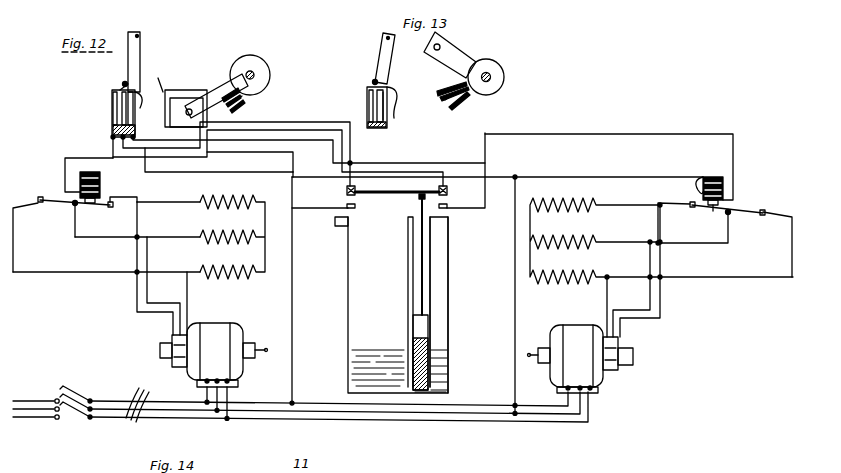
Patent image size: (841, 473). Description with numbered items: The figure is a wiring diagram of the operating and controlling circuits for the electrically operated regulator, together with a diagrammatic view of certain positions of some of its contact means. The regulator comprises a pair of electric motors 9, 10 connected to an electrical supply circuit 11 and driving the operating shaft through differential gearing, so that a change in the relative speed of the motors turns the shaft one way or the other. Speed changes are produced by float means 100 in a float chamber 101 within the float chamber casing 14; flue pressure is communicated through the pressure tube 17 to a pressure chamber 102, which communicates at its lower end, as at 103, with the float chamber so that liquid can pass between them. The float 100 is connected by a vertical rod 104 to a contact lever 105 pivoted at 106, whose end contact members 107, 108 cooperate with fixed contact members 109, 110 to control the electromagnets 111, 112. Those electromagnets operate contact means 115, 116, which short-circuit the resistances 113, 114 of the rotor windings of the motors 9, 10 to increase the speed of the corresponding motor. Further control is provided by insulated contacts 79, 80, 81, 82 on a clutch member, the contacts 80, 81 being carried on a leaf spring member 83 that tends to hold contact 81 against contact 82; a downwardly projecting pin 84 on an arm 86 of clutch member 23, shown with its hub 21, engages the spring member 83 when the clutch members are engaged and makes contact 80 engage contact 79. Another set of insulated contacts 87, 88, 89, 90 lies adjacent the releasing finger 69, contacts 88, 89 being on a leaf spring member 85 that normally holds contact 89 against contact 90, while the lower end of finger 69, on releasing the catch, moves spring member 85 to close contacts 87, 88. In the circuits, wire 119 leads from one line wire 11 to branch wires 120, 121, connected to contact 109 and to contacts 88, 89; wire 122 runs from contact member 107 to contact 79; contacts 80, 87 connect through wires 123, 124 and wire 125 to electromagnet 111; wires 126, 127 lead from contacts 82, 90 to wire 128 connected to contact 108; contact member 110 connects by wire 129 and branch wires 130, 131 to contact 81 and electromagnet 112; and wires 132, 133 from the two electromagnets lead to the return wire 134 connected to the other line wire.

In FIG. 14, the electric motor 9 is at (223, 320).
In FIG. 14, the electric motor 10 is at (597, 372).
In FIG. 14, the electrical supply circuit 11 is at (300, 397).
In FIG. 14, the float chamber casing 14 is at (450, 261).
In FIG. 14, the pressure tube 17 is at (343, 230).
In FIG. 12, the hub 21 is at (258, 70).
In FIG. 13, the hub 21 is at (492, 78).
In FIG. 12, the clutch member 23 is at (271, 78).
In FIG. 13, the clutch member 23 is at (502, 68).
In FIG. 12, the releasing finger 69 is at (139, 52).
In FIG. 13, the releasing finger 69 is at (381, 56).
In FIG. 12, the insulated contact 79 is at (233, 110).
In FIG. 13, the insulated contact 79 is at (454, 110).
In FIG. 12, the insulated contact 80 is at (237, 101).
In FIG. 13, the insulated contact 80 is at (444, 103).
In FIG. 12, the insulated contact 81 is at (198, 96).
In FIG. 13, the insulated contact 81 is at (438, 99).
In FIG. 12, the insulated contact 82 is at (192, 96).
In FIG. 13, the insulated contact 82 is at (437, 93).
In FIG. 12, the leaf spring member 83 is at (207, 96).
In FIG. 13, the leaf spring member 83 is at (462, 99).
In FIG. 12, the downwardly projecting pin 84 is at (182, 96).
In FIG. 13, the downwardly projecting pin 84 is at (434, 50).
In FIG. 12, the leaf spring member 85 is at (123, 83).
In FIG. 13, the leaf spring member 85 is at (373, 82).
In FIG. 12, the arm 86 is at (206, 101).
In FIG. 13, the arm 86 is at (462, 53).
In FIG. 12, the insulated contact 87 is at (112, 101).
In FIG. 13, the insulated contact 87 is at (367, 100).
In FIG. 12, the insulated contact 88 is at (118, 112).
In FIG. 13, the insulated contact 88 is at (371, 128).
In FIG. 12, the insulated contact 89 is at (133, 118).
In FIG. 13, the insulated contact 89 is at (388, 126).
In FIG. 12, the insulated contact 90 is at (147, 100).
In FIG. 13, the insulated contact 90 is at (399, 104).
In FIG. 14, the float means 100 is at (424, 316).
In FIG. 14, the float chamber 101 is at (430, 345).
In FIG. 14, the pressure chamber 102 is at (360, 300).
In FIG. 14, the communication passage 103 is at (443, 381).
In FIG. 14, the vertical rod 104 is at (424, 250).
In FIG. 14, the contact lever 105 is at (383, 194).
In FIG. 14, the pivot 106 is at (410, 196).
In FIG. 14, the contact member 107 is at (348, 190).
In FIG. 14, the contact member 108 is at (447, 190).
In FIG. 14, the fixed contact member 109 is at (347, 206).
In FIG. 14, the fixed contact member 110 is at (447, 206).
In FIG. 14, the electromagnet 111 is at (101, 187).
In FIG. 14, the electromagnet 112 is at (691, 184).
In FIG. 14, the resistance 113 is at (200, 268).
In FIG. 14, the resistance 114 is at (599, 268).
In FIG. 14, the contact means 115 is at (105, 208).
In FIG. 14, the contact means 116 is at (757, 218).
In FIG. 14, the wire 119 is at (293, 306).
In FIG. 14, the branch wire 120 is at (294, 224).
In FIG. 14, the branch wire 121 is at (287, 160).
In FIG. 14, the wire 122 is at (296, 105).
In FIG. 14, the wire 123 is at (208, 154).
In FIG. 14, the wire 124 is at (99, 147).
In FIG. 14, the wire 125 is at (64, 171).
In FIG. 12, the wire 126 is at (158, 78).
In FIG. 14, the wire 127 is at (146, 170).
In FIG. 14, the wire 128 is at (270, 145).
In FIG. 14, the wire 129 is at (486, 181).
In FIG. 14, the branch wire 130 is at (462, 163).
In FIG. 14, the branch wire 131 is at (582, 134).
In FIG. 14, the wire 132 is at (256, 173).
In FIG. 14, the wire 133 is at (581, 178).
In FIG. 14, the return wire 134 is at (517, 298).